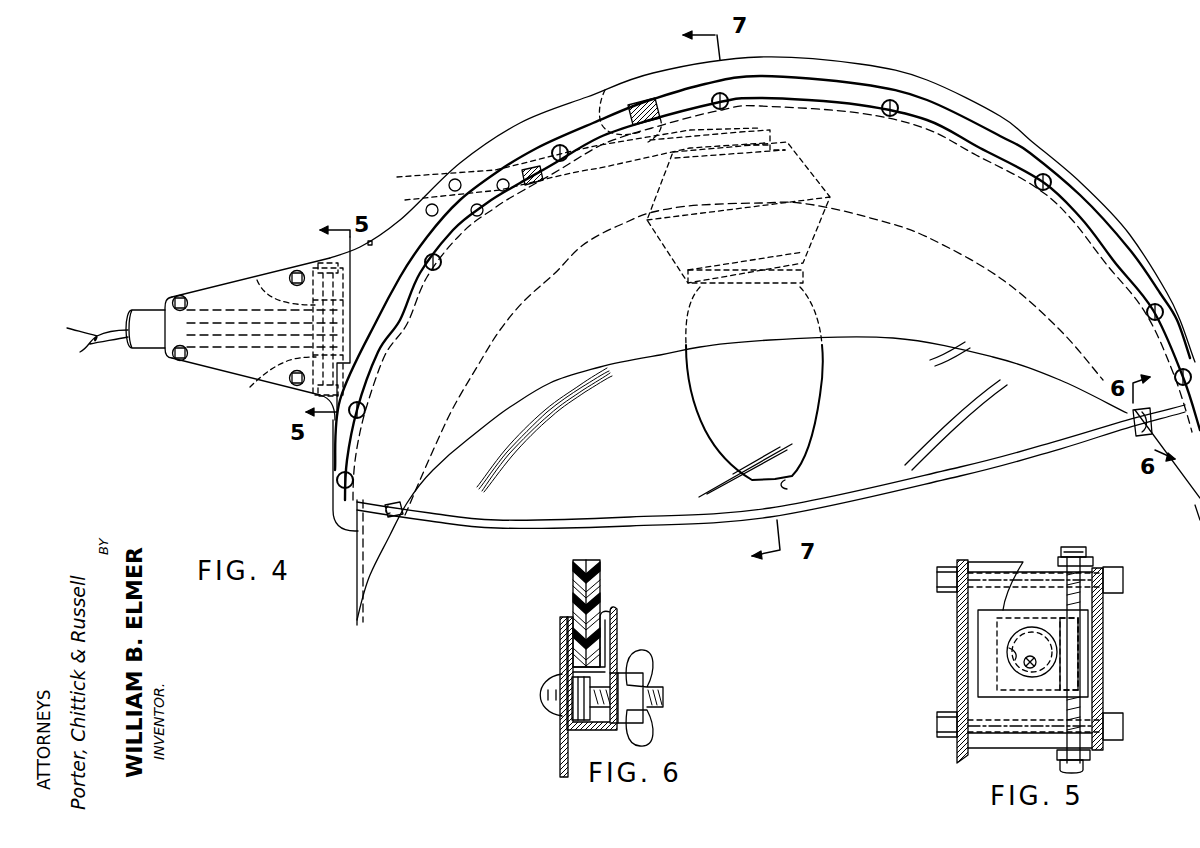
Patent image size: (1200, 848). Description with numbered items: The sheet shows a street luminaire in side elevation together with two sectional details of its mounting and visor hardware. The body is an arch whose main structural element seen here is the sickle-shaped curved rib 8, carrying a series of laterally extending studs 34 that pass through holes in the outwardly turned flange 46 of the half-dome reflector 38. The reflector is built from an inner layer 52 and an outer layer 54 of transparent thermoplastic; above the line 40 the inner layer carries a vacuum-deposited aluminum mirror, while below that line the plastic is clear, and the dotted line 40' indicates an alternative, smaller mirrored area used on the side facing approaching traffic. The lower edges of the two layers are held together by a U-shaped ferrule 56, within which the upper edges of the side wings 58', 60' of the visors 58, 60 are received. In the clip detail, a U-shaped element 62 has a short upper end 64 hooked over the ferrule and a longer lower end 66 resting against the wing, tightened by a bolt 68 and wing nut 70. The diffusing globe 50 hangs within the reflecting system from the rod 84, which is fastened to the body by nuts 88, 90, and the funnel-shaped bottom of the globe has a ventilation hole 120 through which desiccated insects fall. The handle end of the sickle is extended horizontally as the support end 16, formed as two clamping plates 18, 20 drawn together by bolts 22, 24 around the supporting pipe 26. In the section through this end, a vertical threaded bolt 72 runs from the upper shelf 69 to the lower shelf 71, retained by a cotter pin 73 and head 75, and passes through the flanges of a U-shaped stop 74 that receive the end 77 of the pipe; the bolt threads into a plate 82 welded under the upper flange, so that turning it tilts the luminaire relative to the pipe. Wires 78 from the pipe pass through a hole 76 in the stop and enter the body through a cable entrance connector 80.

In FIG. 4, the curved rib 8 is at (850, 76).
In FIG. 4, the support end 16 is at (250, 375).
In FIG. 5, the clamping plate 18 is at (1104, 645).
In FIG. 4, the clamping plate 20 is at (225, 365).
In FIG. 5, the clamping plate 20 is at (957, 655).
In FIG. 4, the bolt 22 is at (297, 386).
In FIG. 5, the bolt 22 is at (937, 580).
In FIG. 4, the bolt 24 is at (172, 360).
In FIG. 4, the pipe 26 is at (140, 310).
In FIG. 5, the pipe 26 is at (1010, 660).
In FIG. 4, the studs 34 is at (905, 100).
In FIG. 4, the reflector half 38 is at (940, 457).
In FIG. 4, the line 40 is at (742, 478).
In FIG. 4, the dotted line 40' is at (754, 358).
In FIG. 4, the outwardly turned flange 46 is at (953, 127).
In FIG. 4, the globe 50 is at (805, 410).
In FIG. 6, the inner layer 52 is at (573, 585).
In FIG. 6, the outer layer 54 is at (598, 584).
In FIG. 4, the U-shaped ferrule 56 is at (497, 519).
In FIG. 6, the U-shaped ferrule 56 is at (612, 638).
In FIG. 4, the visor 58 is at (1166, 483).
In FIG. 4, the side wing 58' is at (1167, 460).
In FIG. 6, the side wing 58' is at (544, 701).
In FIG. 4, the visor 60 is at (355, 576).
In FIG. 4, the side wing 60' is at (401, 561).
In FIG. 6, the U-shaped element 62 is at (628, 662).
In FIG. 6, the upper end 64 is at (603, 612).
In FIG. 6, the lower end 66 is at (597, 725).
In FIG. 6, the bolt 68 is at (556, 696).
In FIG. 5, the upper shelf 69 is at (1090, 565).
In FIG. 6, the wing nut 70 is at (645, 668).
In FIG. 5, the lower shelf 71 is at (1092, 755).
In FIG. 5, the threaded bolt 72 is at (1082, 605).
In FIG. 5, the cotter pin 73 is at (1065, 548).
In FIG. 4, the U-shaped stop 74 is at (280, 284).
In FIG. 5, the U-shaped stop 74 is at (978, 635).
In FIG. 5, the head 75 is at (1085, 768).
In FIG. 4, the hole 76 is at (268, 378).
In FIG. 4, the end 77 is at (352, 340).
In FIG. 4, the wires 78 is at (108, 345).
In FIG. 5, the wires 78 is at (1057, 665).
In FIG. 4, the cable entrance connector 80 is at (645, 97).
In FIG. 4, the plate 82 is at (255, 277).
In FIG. 5, the plate 82 is at (1080, 624).
In FIG. 4, the rod 84 is at (592, 177).
In FIG. 4, the nut 88 is at (525, 188).
In FIG. 4, the nut 90 is at (780, 93).
In FIG. 4, the hole 120 is at (807, 481).